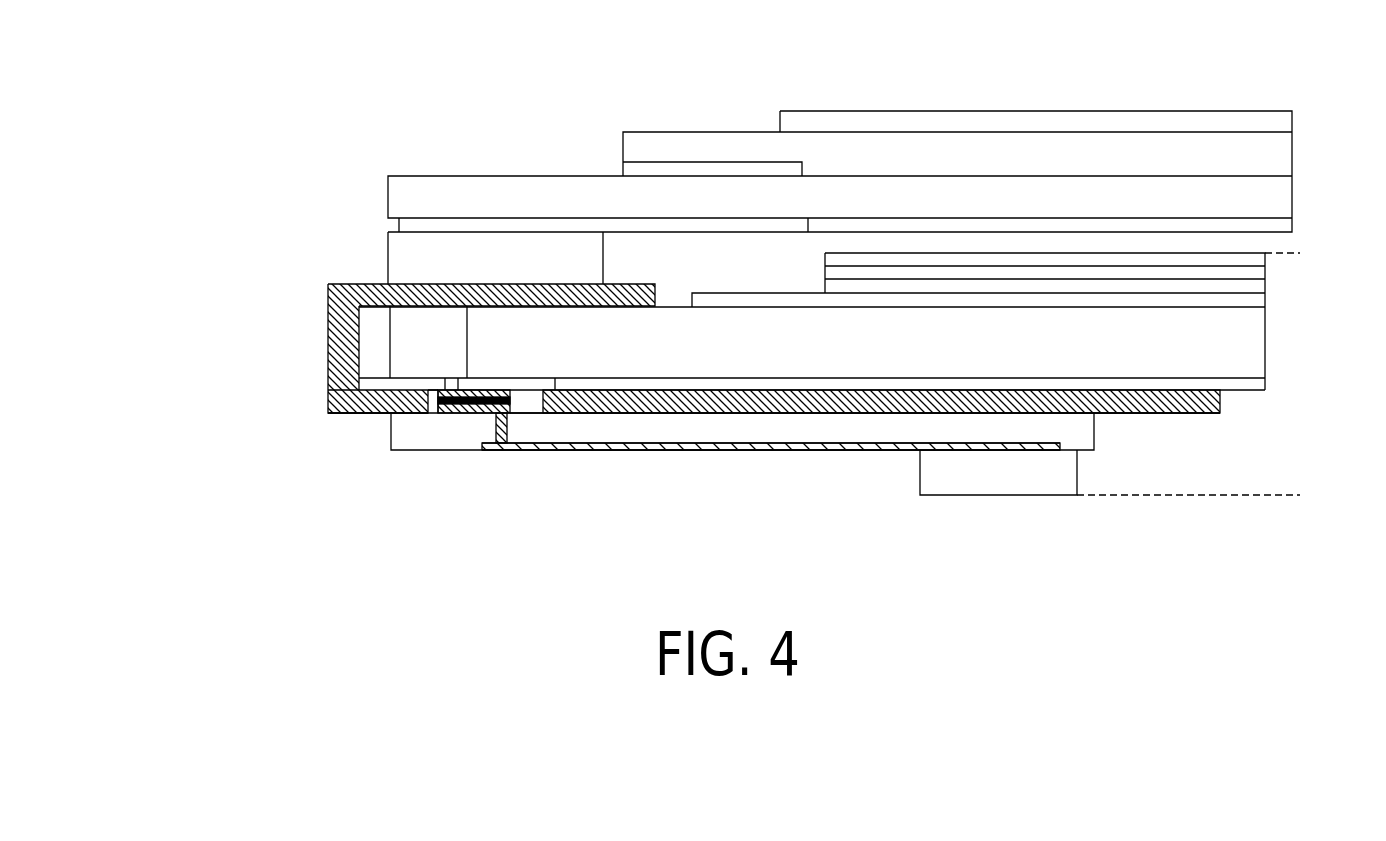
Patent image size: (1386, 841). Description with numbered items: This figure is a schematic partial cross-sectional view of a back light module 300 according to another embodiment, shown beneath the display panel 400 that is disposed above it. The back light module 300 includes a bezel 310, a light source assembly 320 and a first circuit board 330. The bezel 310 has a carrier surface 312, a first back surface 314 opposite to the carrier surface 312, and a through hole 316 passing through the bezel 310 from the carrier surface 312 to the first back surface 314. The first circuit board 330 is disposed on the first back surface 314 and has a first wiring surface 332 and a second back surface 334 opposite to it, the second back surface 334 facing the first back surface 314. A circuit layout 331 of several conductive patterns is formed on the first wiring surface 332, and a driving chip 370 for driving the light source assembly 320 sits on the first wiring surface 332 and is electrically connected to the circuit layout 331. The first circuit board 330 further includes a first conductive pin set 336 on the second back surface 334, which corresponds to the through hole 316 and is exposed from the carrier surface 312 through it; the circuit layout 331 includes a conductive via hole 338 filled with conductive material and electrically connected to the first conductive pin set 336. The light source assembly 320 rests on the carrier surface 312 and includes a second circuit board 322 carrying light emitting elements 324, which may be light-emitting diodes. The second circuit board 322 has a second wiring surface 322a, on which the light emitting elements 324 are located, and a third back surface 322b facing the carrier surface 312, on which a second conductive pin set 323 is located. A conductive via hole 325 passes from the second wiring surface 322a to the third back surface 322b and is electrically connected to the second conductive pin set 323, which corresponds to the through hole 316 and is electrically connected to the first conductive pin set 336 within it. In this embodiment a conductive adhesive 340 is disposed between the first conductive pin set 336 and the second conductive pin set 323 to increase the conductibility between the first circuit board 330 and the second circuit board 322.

The back light module 300 is at (1300, 253).
The bezel 310 is at (1163, 410).
The carrier surface 312 is at (670, 379).
The first back surface 314 is at (647, 421).
The through hole 316 is at (535, 404).
The light source assembly 320 is at (182, 268).
The second circuit board 322 is at (360, 388).
The second wiring surface 322a is at (405, 335).
The third back surface 322b is at (366, 409).
The second conductive pin set 323 is at (500, 386).
The light emitting elements 324 is at (375, 363).
The conductive via hole 325 is at (450, 384).
The first circuit board 330 is at (803, 433).
The circuit layout 331 is at (880, 450).
The first wiring surface 332 is at (741, 458).
The second back surface 334 is at (896, 403).
The first conductive pin set 336 is at (465, 405).
The conductive via hole 338 is at (500, 420).
The conductive adhesive 340 is at (448, 405).
The driving chip 370 is at (992, 482).
The display panel 400 is at (1296, 111).